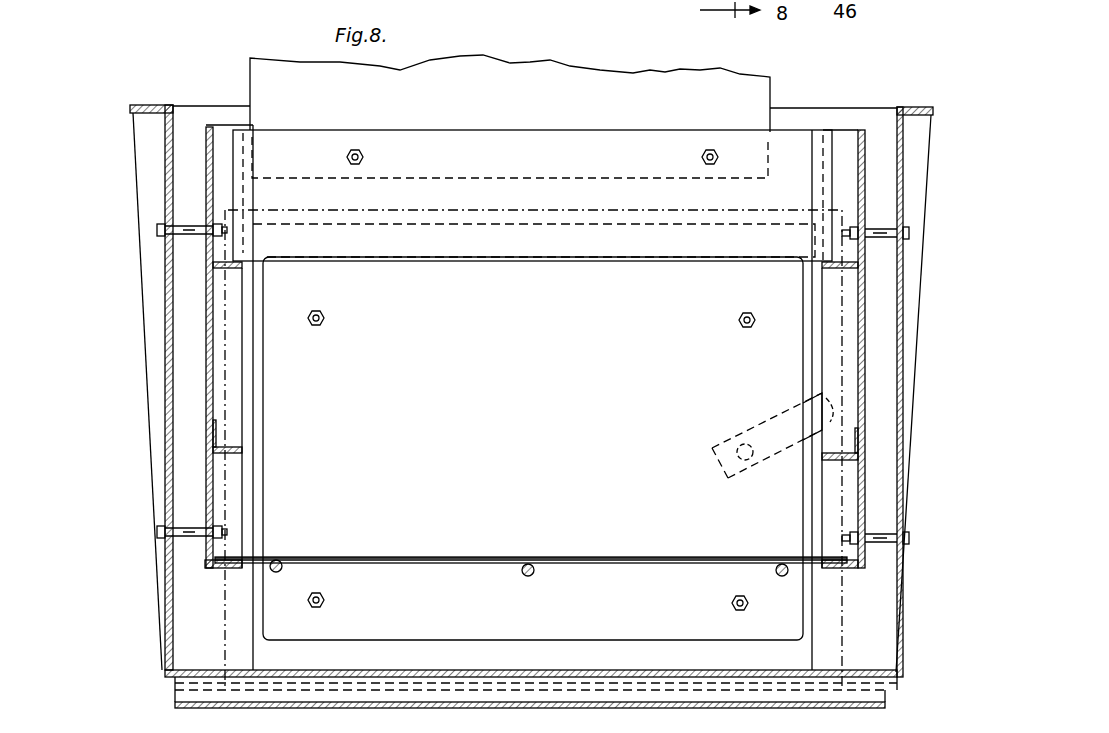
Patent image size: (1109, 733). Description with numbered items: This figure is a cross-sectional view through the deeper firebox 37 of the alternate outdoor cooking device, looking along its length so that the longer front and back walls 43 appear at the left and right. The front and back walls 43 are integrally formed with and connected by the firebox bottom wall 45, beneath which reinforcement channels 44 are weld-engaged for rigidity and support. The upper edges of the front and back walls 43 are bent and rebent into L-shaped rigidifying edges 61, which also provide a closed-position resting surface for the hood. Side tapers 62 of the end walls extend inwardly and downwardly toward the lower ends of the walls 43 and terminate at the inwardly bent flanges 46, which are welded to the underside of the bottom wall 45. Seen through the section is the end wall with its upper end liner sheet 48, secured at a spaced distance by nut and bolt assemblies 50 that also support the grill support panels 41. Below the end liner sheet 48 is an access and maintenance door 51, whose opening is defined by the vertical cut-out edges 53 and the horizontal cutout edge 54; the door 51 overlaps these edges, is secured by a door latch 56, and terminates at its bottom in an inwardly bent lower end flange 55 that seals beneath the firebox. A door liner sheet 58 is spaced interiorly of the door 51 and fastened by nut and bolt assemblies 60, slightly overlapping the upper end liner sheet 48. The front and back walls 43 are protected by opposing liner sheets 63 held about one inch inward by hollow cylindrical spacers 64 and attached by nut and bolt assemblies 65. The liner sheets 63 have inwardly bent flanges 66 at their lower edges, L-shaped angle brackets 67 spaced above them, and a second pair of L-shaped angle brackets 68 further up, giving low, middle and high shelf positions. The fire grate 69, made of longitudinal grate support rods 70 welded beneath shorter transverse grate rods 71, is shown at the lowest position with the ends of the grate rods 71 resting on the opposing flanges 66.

The firebox 37 is at (512, 421).
The grill support panels 41 is at (513, 62).
The front and back walls 43 is at (165, 293).
The reinforcement channels 44 is at (175, 705).
The firebox bottom wall 45 is at (592, 668).
The inwardly bent flanges 46 is at (175, 683).
The upper end liner sheets 48 is at (600, 130).
The nut and bolt assemblies 50 is at (363, 157).
The access and maintenance doors 51 is at (455, 203).
The vertical cut-out edges 53 is at (812, 345).
The horizontal cutout edge 54 is at (487, 228).
The lower end flanges 55 is at (885, 690).
The door latches 56 is at (756, 421).
The door liner sheets 58 is at (263, 365).
The nut and bolt assemblies 60 is at (325, 318).
The L-shaped rigidifying edges 61 is at (140, 103).
The side tapers 62 is at (142, 252).
The liner sheets 63 is at (205, 316).
The hollow cylindrical spacers 64 is at (190, 224).
The nut and bolt assemblies 65 is at (157, 230).
The inwardly bent flanges 66 is at (230, 560).
The L-shaped angle brackets 67 is at (232, 450).
The L-shaped angle brackets 68 is at (232, 270).
The fire grate 69 is at (585, 553).
The longitudinal grate support rods 70 is at (276, 573).
The transverse grate rods 71 is at (387, 556).